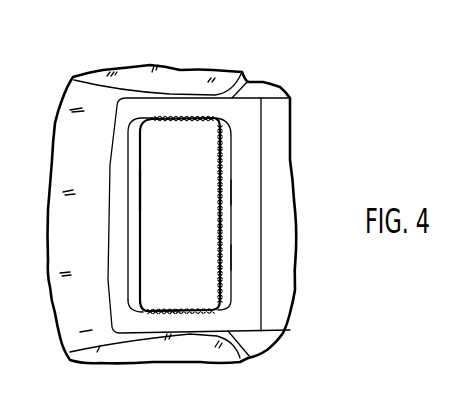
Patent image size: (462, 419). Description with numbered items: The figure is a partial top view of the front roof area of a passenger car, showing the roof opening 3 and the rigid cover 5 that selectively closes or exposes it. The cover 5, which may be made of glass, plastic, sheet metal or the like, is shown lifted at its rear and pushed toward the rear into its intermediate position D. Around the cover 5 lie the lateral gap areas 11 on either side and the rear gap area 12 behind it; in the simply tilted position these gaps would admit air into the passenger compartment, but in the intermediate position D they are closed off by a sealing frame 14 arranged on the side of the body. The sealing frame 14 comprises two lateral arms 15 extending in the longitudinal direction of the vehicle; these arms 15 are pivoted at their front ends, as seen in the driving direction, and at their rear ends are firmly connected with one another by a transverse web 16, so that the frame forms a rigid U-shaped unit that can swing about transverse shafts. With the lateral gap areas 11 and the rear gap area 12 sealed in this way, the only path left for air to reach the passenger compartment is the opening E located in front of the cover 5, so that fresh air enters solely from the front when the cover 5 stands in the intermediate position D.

The roof opening 3 is at (128, 150).
The cover 5 is at (203, 148).
The lateral gap areas 11 is at (183, 118).
The rear gap area 12 is at (226, 193).
The sealing frame 14 is at (229, 258).
The lateral arms 15 is at (165, 312).
The transverse web 16 is at (229, 223).
The intermediate position D is at (172, 230).
The opening E is at (141, 192).